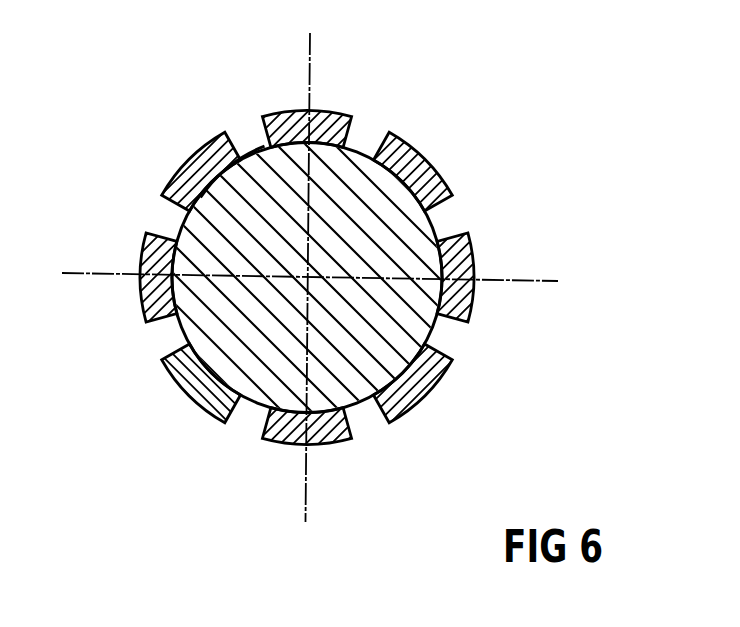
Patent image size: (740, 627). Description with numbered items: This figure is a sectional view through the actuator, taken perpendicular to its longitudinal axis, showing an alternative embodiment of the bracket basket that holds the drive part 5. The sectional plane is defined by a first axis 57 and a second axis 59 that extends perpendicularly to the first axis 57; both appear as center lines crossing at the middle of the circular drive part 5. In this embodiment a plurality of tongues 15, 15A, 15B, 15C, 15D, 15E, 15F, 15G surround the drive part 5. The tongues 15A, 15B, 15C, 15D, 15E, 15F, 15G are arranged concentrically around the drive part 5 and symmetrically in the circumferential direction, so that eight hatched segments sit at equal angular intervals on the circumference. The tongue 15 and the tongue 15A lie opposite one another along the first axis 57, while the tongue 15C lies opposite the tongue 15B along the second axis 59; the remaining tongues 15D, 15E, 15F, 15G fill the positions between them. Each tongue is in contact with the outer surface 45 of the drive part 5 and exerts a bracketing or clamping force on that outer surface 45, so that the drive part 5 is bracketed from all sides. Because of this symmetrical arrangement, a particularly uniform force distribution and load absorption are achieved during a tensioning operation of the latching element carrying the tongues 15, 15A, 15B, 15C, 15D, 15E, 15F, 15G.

The drive part 5 is at (407, 235).
The tongue 15 is at (290, 114).
The tongue 15A is at (330, 446).
The tongue 15B is at (423, 400).
The tongue 15C is at (477, 262).
The tongue 15D is at (434, 163).
The tongue 15E is at (187, 175).
The tongue 15F is at (138, 296).
The tongue 15G is at (197, 403).
The outer surface 45 is at (255, 148).
The first axis 57 is at (312, 69).
The second axis 59 is at (522, 282).